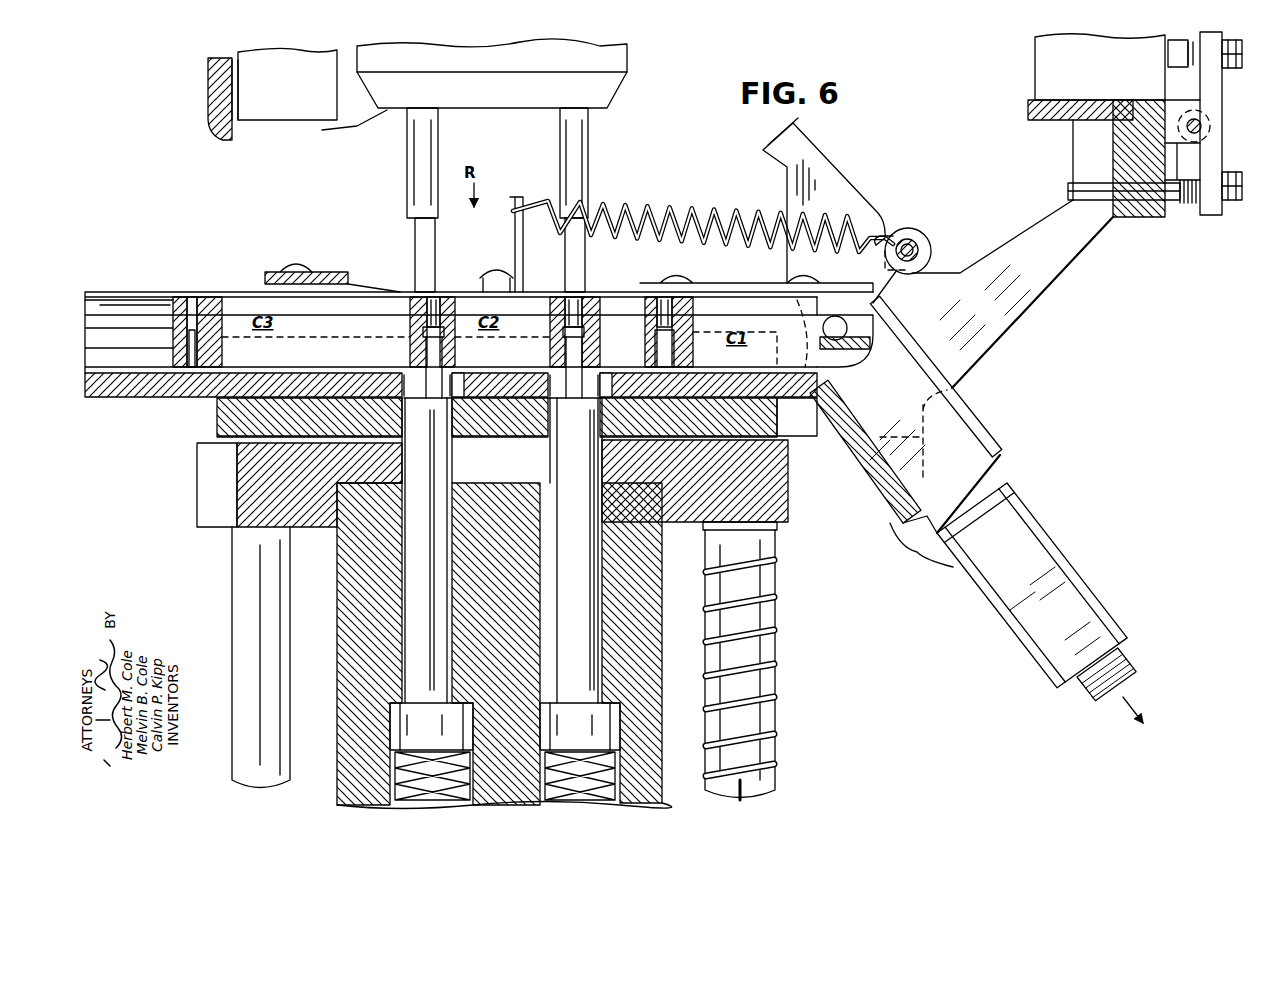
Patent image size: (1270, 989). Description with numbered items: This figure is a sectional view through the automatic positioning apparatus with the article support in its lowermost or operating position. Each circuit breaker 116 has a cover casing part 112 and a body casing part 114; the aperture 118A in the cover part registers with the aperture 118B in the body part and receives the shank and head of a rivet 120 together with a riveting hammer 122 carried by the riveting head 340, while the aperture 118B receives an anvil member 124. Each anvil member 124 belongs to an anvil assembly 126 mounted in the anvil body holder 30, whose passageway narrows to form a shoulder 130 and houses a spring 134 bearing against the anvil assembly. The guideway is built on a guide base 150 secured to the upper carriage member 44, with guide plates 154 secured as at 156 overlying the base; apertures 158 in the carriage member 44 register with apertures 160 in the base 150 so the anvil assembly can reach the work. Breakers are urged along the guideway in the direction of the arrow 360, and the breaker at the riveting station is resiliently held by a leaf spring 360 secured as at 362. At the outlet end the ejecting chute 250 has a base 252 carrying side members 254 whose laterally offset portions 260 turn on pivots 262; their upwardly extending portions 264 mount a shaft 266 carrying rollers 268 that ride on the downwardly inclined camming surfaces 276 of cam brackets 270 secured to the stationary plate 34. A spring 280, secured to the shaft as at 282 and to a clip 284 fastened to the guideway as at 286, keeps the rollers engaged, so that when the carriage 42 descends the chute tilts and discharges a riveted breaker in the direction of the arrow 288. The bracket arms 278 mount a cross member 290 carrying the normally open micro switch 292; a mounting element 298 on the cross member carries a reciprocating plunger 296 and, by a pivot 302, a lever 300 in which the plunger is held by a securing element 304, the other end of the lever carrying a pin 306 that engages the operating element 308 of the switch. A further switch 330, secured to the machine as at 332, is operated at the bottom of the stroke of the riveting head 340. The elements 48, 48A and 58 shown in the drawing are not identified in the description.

The anvil body holder 30 is at (337, 634).
The stationary plate 34 is at (318, 528).
The carriage 42 is at (217, 426).
The upper carriage member 44 is at (500, 417).
The guide rod 48 is at (232, 566).
The guide rod 48A is at (777, 580).
The coil spring 58 is at (778, 660).
The cover casing part 112 is at (237, 305).
The body casing part 114 is at (187, 335).
The automatic circuit breaker 116 is at (992, 612).
The aperture in cover casing part 118A is at (196, 297).
The aperture in body casing part 118B is at (187, 352).
The rivet 120 is at (433, 297).
The riveting hammer 122 is at (415, 242).
The anvil member 124 is at (442, 358).
The anvil assembly 126 is at (453, 570).
The shoulder 130 is at (545, 702).
The spring 134 is at (540, 762).
The guide base 150 is at (120, 392).
The guide plate 154 is at (147, 300).
The securing point of guide plates 156 is at (118, 292).
The aperture in carriage member 158 is at (400, 400).
The aperture in guide base 160 is at (462, 390).
The article ejecting chute 250 is at (860, 468).
The chute base 252 is at (880, 492).
The side member 254 is at (947, 427).
The laterally offset portion 260 is at (795, 323).
The pivot 262 is at (838, 320).
The upwardly extending portion 264 is at (922, 233).
The shaft 266 is at (914, 247).
The roller 268 is at (893, 232).
The cam bracket 270 is at (850, 183).
The camming surface 276 is at (822, 150).
The bracket arm 278 is at (1073, 140).
The spring 280 is at (630, 212).
The spring securing point 282 is at (918, 252).
The clip 284 is at (523, 200).
The clip securing point 286 is at (492, 270).
The arrow 288 is at (1125, 708).
The cross member 290 is at (1028, 110).
The micro switch 292 is at (1035, 70).
The plunger 296 is at (1085, 188).
The mounting element 298 is at (1143, 217).
The lever 300 is at (1210, 215).
The pivot 302 is at (1194, 118).
The securing element 304 is at (1230, 202).
The pin 306 is at (1222, 44).
The operating element 308 is at (1175, 68).
The switch 330 is at (273, 118).
The switch securing point 332 is at (212, 144).
The riveting head 340 is at (505, 98).
The arrow / leaf spring 360 is at (330, 272).
The leaf spring securing point 362 is at (298, 262).